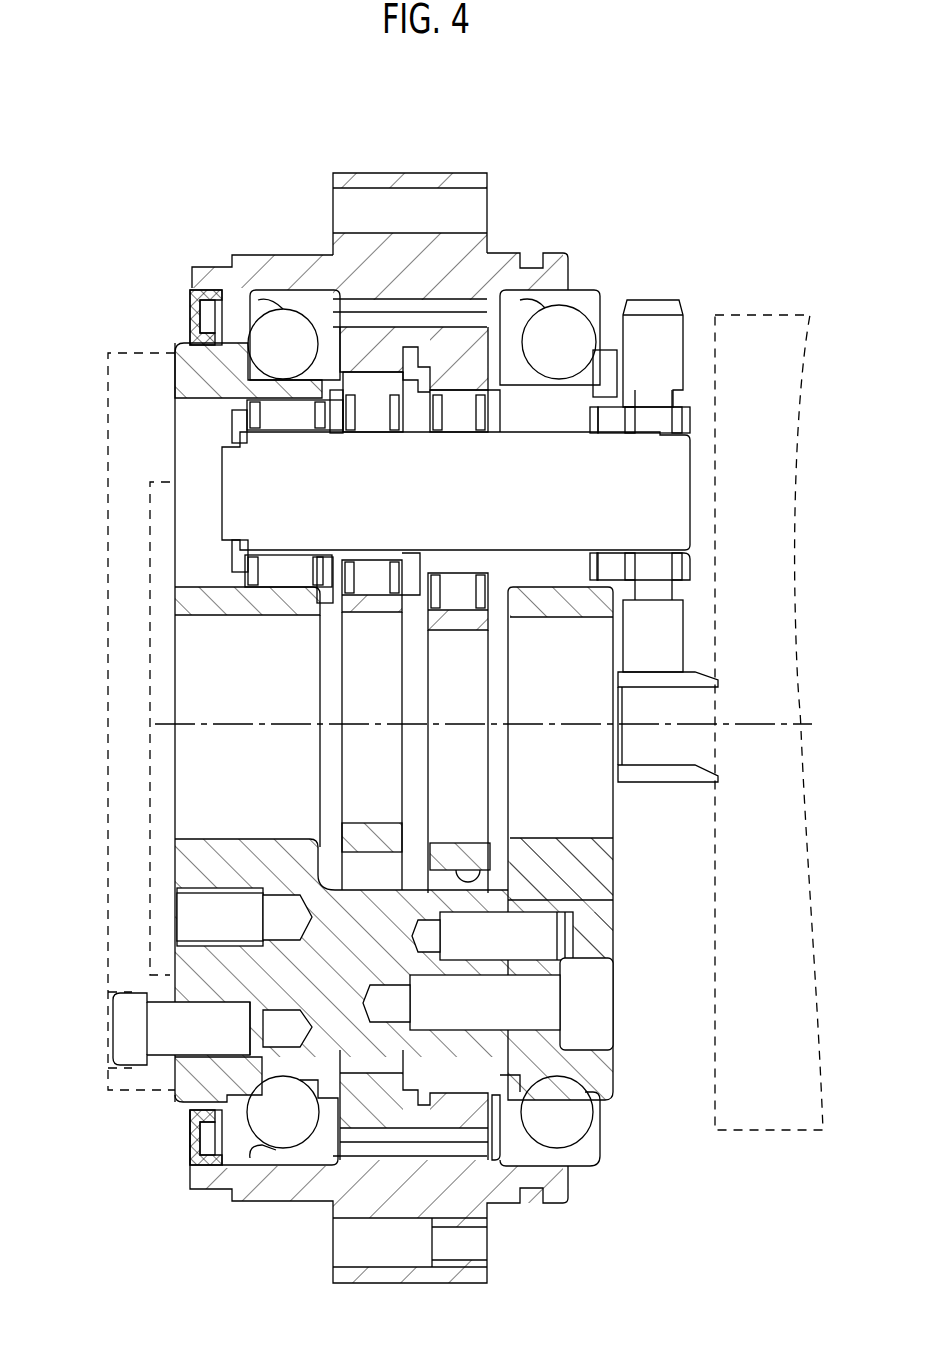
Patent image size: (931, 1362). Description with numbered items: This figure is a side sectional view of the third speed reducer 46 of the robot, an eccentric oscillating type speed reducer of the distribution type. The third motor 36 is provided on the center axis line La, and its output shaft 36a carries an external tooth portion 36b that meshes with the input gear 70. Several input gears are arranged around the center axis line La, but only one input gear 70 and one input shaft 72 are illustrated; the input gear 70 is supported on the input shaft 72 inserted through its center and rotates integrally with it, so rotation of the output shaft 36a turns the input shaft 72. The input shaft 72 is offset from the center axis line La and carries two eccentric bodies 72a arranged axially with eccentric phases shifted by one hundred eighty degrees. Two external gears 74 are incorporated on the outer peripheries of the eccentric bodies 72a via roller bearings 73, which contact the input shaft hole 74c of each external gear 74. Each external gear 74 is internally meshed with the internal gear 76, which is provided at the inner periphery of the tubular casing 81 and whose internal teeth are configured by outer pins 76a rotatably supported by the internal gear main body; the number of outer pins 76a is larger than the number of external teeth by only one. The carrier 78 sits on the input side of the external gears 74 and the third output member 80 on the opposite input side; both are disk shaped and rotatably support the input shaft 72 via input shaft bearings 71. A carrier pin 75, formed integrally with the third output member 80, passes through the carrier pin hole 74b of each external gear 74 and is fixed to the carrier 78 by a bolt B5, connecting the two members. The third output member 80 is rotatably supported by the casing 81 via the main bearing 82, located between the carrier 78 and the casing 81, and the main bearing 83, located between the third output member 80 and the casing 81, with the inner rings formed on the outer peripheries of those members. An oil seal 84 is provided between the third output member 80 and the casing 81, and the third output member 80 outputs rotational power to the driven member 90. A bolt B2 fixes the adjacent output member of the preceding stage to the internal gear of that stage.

The third speed reducer 46 is at (624, 119).
The third motor 36 is at (770, 314).
The output shaft 36a is at (650, 782).
The external tooth portion 36b is at (652, 660).
The input gear 70 is at (655, 330).
The input shaft bearing 71 is at (270, 408).
The input shaft 72 is at (655, 493).
The eccentric body 72a is at (385, 433).
The roller bearing 73 is at (388, 592).
The external gear 74 is at (298, 320).
The carrier pin hole 74b is at (470, 870).
The input shaft hole 74c is at (490, 392).
The carrier pin 75 is at (345, 905).
The internal gear 76 is at (447, 305).
The outer pin 76a is at (410, 313).
The carrier 78 is at (530, 598).
The third output member 80 is at (172, 352).
The casing 81 is at (322, 300).
The main bearing 82 is at (565, 1110).
The main bearing 83 is at (285, 1120).
The oil seal 84 is at (195, 1125).
The driven member 90 is at (108, 372).
The bolt B2 is at (130, 1025).
The bolt B5 is at (585, 1003).
The center axis line La is at (735, 724).